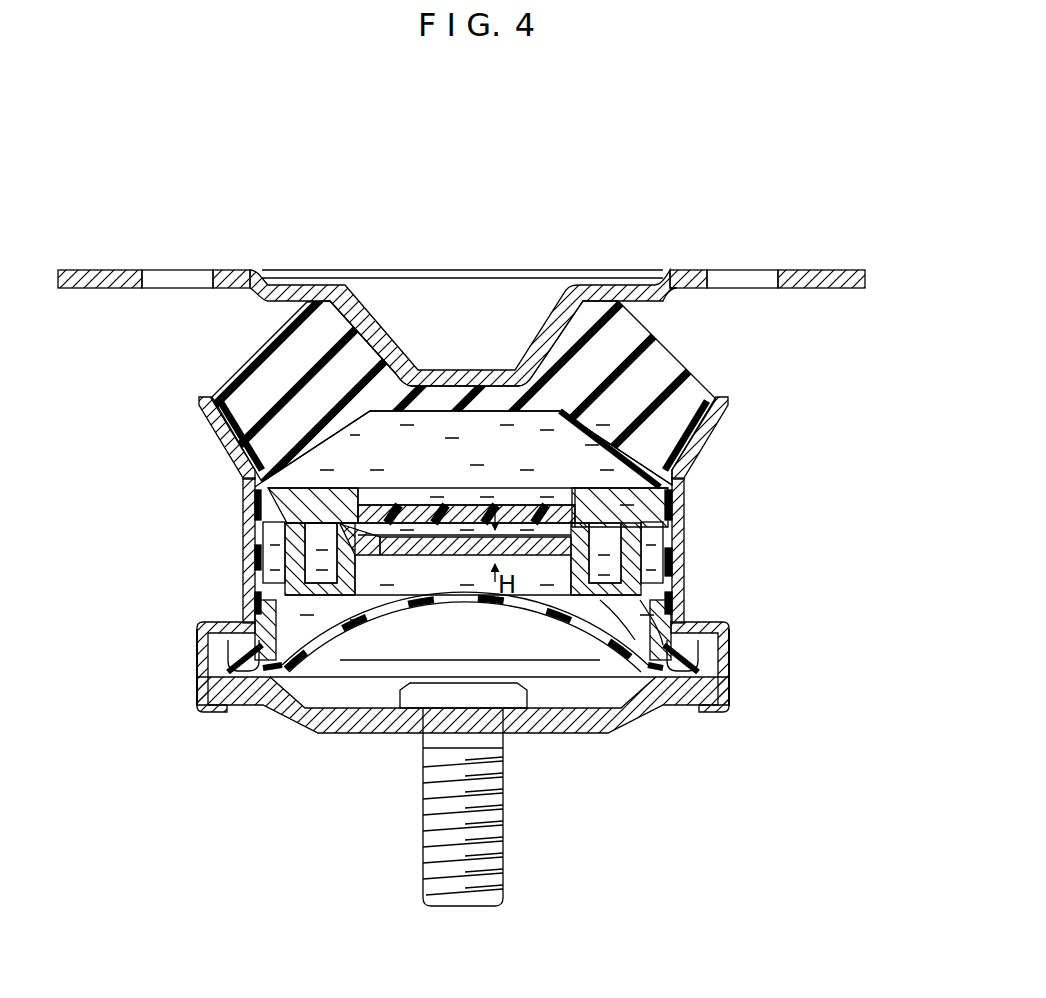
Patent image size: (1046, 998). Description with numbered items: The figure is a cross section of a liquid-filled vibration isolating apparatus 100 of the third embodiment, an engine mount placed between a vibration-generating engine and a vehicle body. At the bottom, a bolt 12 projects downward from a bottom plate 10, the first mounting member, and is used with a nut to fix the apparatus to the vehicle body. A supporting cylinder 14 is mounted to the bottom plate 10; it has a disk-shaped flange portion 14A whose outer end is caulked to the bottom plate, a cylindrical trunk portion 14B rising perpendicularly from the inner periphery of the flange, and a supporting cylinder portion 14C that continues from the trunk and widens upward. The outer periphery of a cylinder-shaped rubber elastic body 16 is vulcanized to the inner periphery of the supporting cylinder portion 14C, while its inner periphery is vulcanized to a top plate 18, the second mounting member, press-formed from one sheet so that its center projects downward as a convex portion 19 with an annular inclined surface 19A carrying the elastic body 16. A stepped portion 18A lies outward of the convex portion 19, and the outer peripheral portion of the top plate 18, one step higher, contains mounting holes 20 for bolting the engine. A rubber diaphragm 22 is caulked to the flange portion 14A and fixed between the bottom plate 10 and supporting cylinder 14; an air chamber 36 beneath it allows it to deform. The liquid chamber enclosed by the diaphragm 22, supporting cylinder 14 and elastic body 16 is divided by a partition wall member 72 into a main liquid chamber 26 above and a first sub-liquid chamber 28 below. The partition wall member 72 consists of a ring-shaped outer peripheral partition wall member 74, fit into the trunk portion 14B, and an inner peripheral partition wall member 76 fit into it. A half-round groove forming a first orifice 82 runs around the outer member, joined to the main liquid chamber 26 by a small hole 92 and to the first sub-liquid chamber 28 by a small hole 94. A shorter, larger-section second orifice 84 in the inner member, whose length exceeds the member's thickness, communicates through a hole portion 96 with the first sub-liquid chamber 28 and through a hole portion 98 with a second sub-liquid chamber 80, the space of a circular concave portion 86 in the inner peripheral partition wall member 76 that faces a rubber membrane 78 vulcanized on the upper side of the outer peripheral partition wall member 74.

The vibration isolating apparatus 100 is at (683, 202).
The bottom plate 10 is at (584, 734).
The bolt 12 is at (500, 823).
The supporting cylinder 14 is at (690, 527).
The flange portion 14A is at (713, 622).
The trunk portion 14B is at (691, 603).
The supporting cylinder portion 14C is at (704, 462).
The rubber elastic body 16 is at (697, 400).
The top plate 18 is at (88, 271).
The stepped portion 18A is at (627, 290).
The convex portion 19 is at (388, 316).
The annular inclined surface 19A is at (544, 326).
The mounting holes 20 is at (197, 270).
The rubber diaphragm 22 is at (340, 635).
The main liquid chamber 26 is at (467, 448).
The first sub-liquid chamber 28 is at (390, 662).
The air chamber 36 is at (500, 663).
The partition wall member 72 is at (353, 481).
The outer peripheral partition wall member 74 is at (600, 497).
The inner peripheral partition wall member 76 is at (380, 590).
The rubber membrane 78 is at (503, 517).
The second sub-liquid chamber 80 is at (440, 533).
The first orifice 82 is at (275, 535).
The second orifice 84 is at (605, 560).
The circular concave portion 86 is at (468, 538).
The small hole 92 is at (290, 503).
The small hole 94 is at (640, 600).
The hole portion 96 is at (608, 593).
The hole portion 98 is at (377, 533).